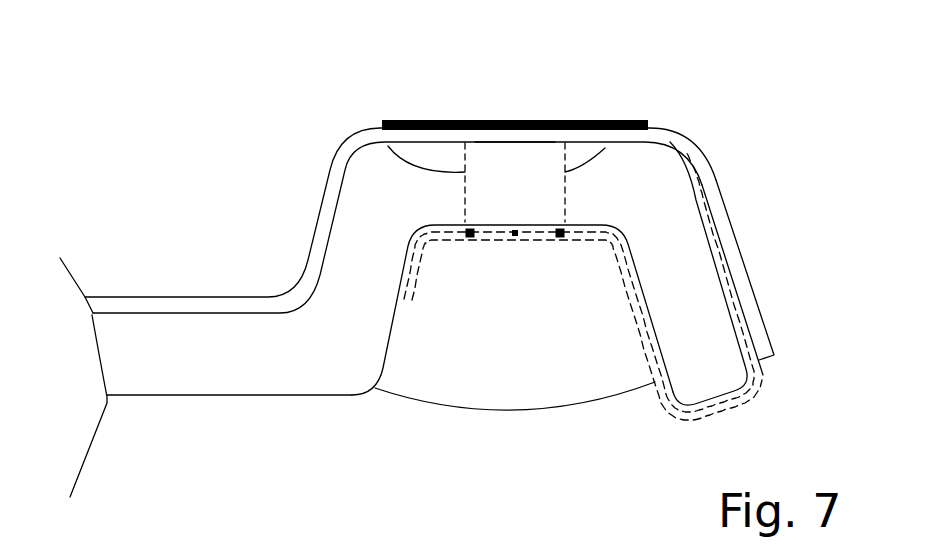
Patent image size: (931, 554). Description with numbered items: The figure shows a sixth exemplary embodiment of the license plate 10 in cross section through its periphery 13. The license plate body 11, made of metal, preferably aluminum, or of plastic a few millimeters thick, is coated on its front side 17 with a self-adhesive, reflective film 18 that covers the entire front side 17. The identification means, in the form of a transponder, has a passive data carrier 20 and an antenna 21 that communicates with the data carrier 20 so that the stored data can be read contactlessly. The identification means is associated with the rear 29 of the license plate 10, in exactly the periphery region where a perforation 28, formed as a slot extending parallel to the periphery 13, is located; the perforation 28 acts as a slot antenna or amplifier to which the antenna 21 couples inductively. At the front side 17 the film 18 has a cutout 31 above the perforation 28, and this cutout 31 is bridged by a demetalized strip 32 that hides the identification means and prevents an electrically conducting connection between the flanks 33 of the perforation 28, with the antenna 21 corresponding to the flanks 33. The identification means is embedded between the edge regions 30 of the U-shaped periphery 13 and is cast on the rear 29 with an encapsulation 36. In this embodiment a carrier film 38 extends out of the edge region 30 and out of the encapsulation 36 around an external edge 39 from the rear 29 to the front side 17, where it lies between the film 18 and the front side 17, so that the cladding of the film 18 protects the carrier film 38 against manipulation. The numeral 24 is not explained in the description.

The license plate 10 is at (146, 246).
The license plate body 11 is at (160, 382).
The periphery 13 is at (669, 206).
The front side 17 is at (138, 312).
The film 18 is at (227, 302).
The data carrier 20 is at (515, 236).
The antenna 21 is at (470, 237).
The conductive bar 24 is at (387, 120).
The perforation 28 is at (493, 177).
The rear 29 is at (213, 395).
The edge regions 30 is at (394, 302).
The cutout 31 is at (451, 145).
The strip 32 is at (568, 145).
The flanks 33 is at (388, 146).
The encapsulation 36 is at (365, 385).
The carrier film 38 is at (752, 392).
The external edge 39 is at (718, 390).